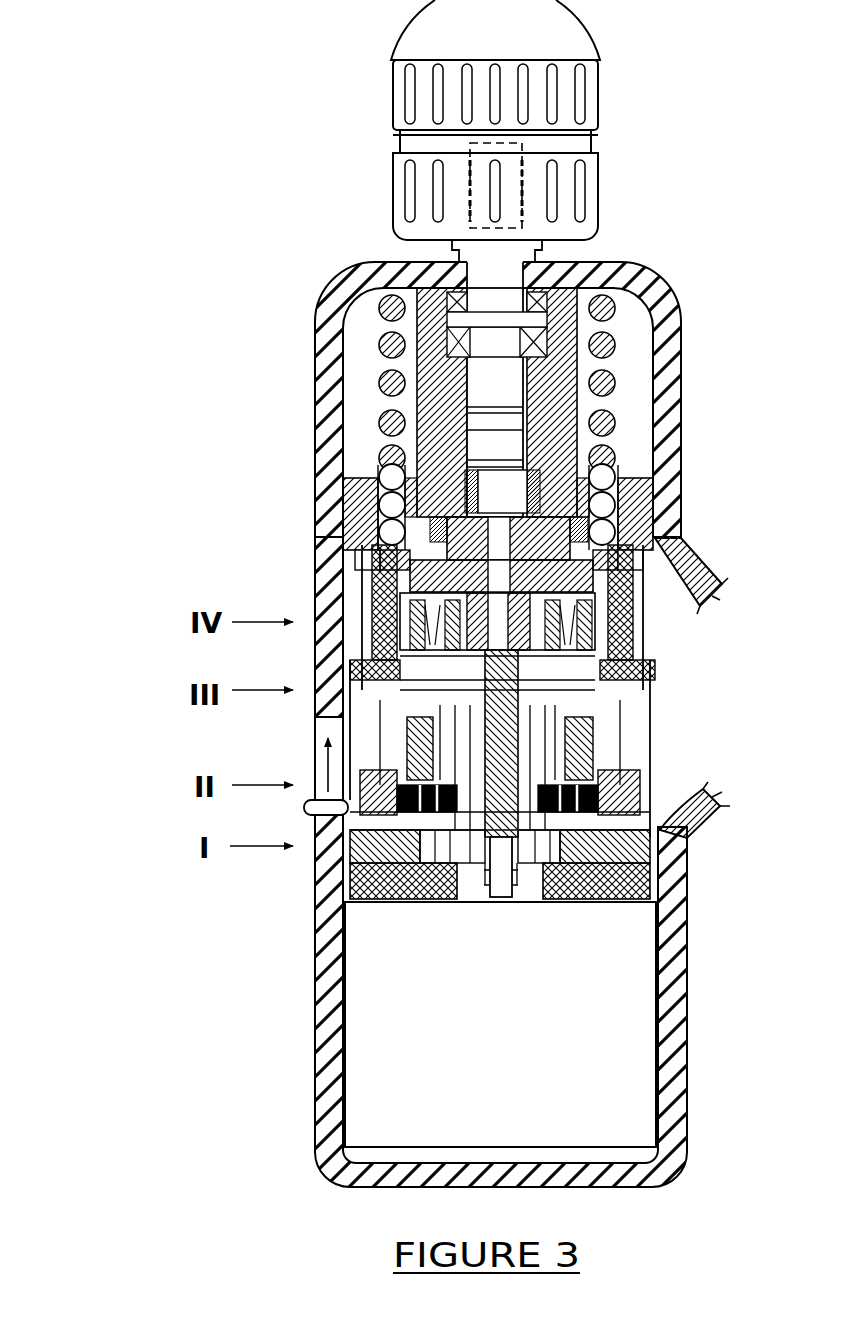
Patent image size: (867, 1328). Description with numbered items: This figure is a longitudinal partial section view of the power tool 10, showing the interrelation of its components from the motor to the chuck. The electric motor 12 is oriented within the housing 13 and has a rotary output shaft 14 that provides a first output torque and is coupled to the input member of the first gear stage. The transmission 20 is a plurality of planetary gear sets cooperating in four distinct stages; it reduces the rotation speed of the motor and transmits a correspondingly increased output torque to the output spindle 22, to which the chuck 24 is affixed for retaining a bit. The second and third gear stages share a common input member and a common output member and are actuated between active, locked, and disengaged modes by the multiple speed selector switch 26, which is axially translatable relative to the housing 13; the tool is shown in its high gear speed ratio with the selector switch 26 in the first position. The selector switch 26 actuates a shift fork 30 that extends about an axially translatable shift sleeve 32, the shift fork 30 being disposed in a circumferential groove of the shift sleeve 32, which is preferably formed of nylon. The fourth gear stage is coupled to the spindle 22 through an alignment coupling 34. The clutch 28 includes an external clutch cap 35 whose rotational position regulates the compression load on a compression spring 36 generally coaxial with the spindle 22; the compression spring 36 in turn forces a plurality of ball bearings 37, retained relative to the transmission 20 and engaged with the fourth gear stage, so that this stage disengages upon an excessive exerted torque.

The power tool 10 is at (172, 438).
The electric motor 12 is at (366, 1147).
The housing 13 is at (314, 1073).
The rotary output shaft 14 is at (488, 894).
The transmission 20 is at (196, 738).
The output spindle 22 is at (466, 380).
The chuck 24 is at (392, 162).
The multiple speed selector switch 26 is at (304, 807).
The clutch 28 is at (308, 443).
The shift fork 30 is at (316, 855).
The shift sleeve 32 is at (693, 838).
The alignment coupling 34 is at (446, 528).
The clutch cap 35 is at (314, 373).
The compression spring 36 is at (385, 340).
The ball bearings 37 is at (676, 518).